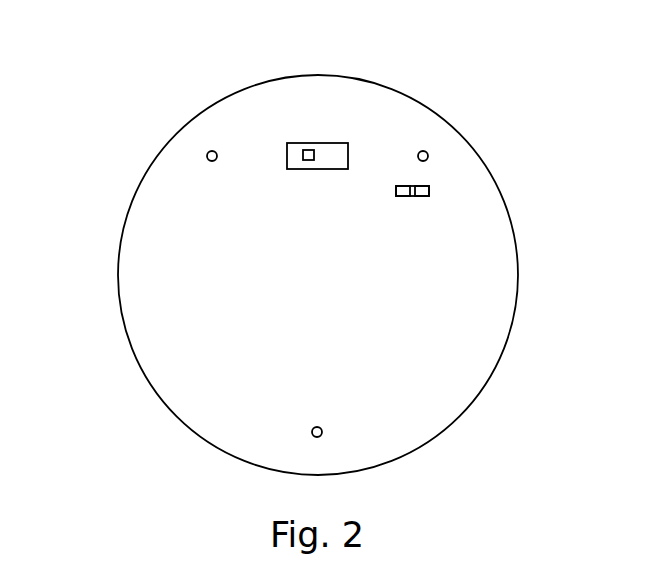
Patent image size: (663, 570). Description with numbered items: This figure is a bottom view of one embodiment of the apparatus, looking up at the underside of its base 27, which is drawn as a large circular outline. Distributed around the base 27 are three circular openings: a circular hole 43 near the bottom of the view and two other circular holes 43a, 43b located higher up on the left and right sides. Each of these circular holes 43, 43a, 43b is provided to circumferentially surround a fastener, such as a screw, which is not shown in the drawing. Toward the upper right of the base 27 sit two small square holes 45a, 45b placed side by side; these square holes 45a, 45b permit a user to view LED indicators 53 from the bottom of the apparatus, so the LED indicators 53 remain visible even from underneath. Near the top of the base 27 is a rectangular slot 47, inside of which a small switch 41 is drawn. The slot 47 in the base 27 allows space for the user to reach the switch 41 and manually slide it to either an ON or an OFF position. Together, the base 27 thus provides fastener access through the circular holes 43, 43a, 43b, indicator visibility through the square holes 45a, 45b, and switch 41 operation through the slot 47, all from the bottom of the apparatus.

The base 27 is at (152, 333).
The switch 41 is at (306, 150).
The slot 47 is at (332, 156).
The circular hole 43 is at (323, 434).
The circular hole 43a is at (207, 158).
The circular hole 43b is at (427, 152).
The square hole 45a is at (407, 195).
The square hole 45b is at (425, 195).
The LED indicators 53 is at (429, 190).